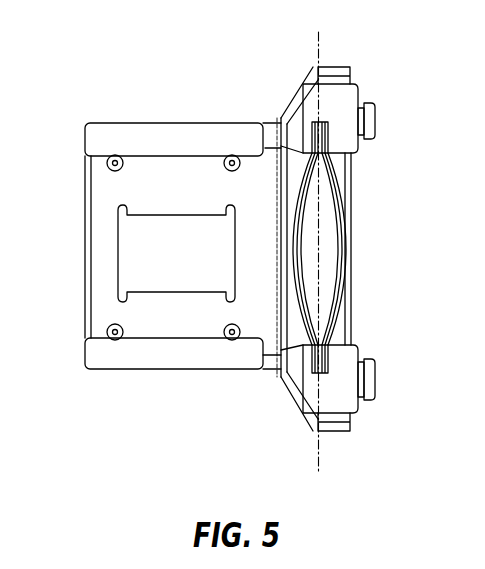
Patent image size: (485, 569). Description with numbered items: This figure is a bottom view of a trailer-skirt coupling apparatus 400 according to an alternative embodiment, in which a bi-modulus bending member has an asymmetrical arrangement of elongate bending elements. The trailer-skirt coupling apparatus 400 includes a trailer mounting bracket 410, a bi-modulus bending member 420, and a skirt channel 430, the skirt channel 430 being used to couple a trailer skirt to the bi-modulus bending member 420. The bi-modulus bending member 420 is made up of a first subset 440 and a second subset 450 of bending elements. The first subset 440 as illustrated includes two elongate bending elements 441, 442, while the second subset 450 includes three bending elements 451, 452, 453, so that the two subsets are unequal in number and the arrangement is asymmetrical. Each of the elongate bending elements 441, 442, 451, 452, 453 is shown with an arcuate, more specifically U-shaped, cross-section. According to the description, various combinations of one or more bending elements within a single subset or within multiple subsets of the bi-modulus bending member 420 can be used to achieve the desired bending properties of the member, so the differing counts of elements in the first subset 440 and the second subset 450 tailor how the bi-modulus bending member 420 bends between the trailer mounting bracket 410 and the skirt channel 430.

The trailer-skirt coupling apparatus 400 is at (131, 46).
The trailer mounting bracket 410 is at (135, 123).
The bi-modulus bending member 420 is at (333, 138).
The skirt channel 430 is at (350, 403).
The first subset 440 is at (305, 162).
The elongate bending element 441 is at (302, 187).
The elongate bending element 442 is at (303, 313).
The second subset 450 is at (342, 163).
The bending element 451 is at (343, 232).
The bending element 452 is at (342, 257).
The bending element 453 is at (340, 302).